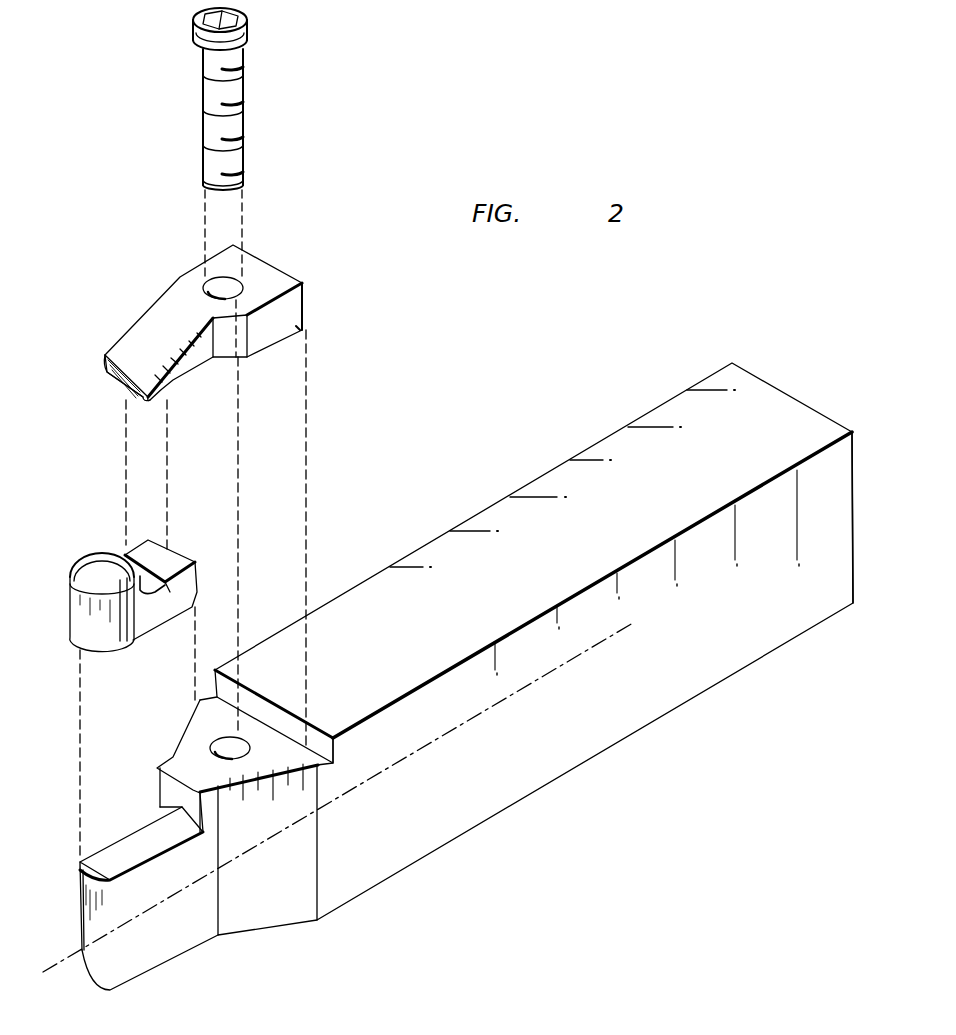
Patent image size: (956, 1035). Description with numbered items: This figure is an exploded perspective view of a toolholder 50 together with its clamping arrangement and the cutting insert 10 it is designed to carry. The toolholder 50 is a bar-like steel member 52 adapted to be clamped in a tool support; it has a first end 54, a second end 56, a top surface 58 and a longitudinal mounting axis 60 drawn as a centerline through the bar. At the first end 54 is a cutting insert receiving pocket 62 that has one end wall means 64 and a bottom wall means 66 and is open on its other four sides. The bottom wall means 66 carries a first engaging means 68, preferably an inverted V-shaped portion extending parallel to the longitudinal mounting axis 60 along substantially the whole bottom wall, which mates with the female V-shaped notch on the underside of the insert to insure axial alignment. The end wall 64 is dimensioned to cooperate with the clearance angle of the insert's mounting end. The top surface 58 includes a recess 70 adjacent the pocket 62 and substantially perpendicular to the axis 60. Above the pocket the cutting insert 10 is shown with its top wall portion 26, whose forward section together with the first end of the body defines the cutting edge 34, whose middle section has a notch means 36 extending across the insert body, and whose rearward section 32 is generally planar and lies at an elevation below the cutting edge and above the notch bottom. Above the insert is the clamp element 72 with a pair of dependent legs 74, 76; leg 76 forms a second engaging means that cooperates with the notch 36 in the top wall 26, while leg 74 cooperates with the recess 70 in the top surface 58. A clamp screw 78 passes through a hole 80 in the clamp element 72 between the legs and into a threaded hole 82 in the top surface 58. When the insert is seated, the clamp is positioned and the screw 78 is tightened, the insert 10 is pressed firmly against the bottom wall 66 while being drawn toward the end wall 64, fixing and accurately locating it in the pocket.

The cutting insert 10 is at (128, 582).
The top wall portion 26 is at (76, 572).
The rearward section 32 is at (175, 556).
The cutting edge 34 is at (72, 606).
The second notch means 36 is at (165, 597).
The toolholder 50 is at (441, 679).
The bar-like steel member 52 is at (760, 645).
The first end 54 is at (182, 960).
The second end 56 is at (805, 405).
The top surface 58 is at (530, 492).
The longitudinal mounting axis 60 is at (52, 960).
The cutting insert receiving pocket 62 is at (116, 871).
The end wall means 64 is at (165, 790).
The bottom wall means 66 is at (75, 862).
The first engaging means 68 is at (140, 855).
The recess 70 is at (255, 715).
The clamp element 72 is at (214, 322).
The leg 74 is at (305, 310).
The leg 76 is at (110, 385).
The clamp screw 78 is at (203, 95).
The hole 80 is at (208, 292).
The threaded hole 82 is at (215, 752).